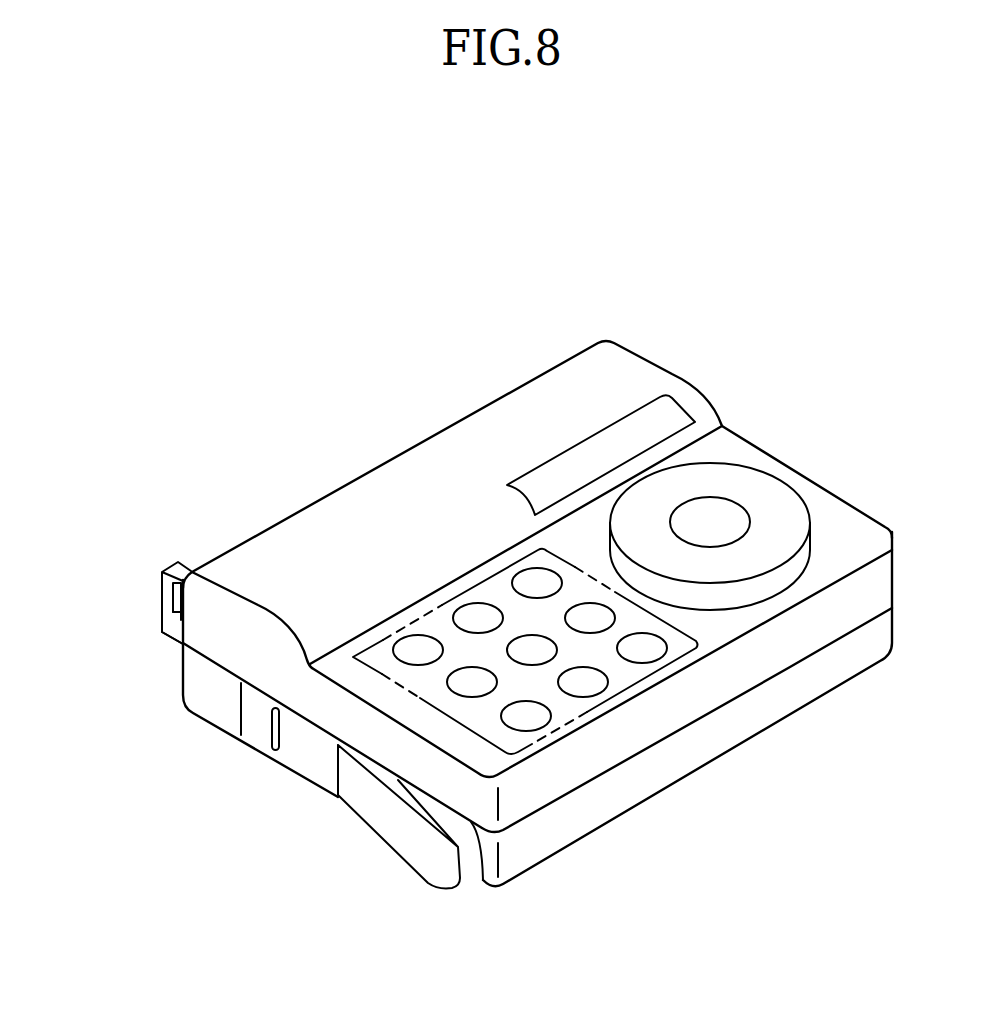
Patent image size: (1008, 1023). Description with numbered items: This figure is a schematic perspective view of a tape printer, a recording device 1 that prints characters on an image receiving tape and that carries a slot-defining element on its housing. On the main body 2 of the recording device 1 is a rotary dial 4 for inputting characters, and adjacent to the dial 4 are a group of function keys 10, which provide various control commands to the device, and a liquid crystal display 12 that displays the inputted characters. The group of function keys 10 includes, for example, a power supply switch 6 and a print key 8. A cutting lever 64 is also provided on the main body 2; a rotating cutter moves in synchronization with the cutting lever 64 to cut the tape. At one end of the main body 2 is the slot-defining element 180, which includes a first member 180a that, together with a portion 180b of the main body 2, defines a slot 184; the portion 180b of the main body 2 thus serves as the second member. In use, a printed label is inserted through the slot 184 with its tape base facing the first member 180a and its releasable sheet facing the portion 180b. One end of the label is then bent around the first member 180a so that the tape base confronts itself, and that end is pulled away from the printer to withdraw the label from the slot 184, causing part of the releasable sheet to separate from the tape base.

The recording device 1 is at (280, 500).
The main body 2 is at (460, 457).
The rotary dial 4 is at (781, 501).
The power supply switch 6 is at (526, 722).
The print key 8 is at (407, 653).
The group of function keys 10 is at (647, 677).
The liquid crystal display 12 is at (642, 423).
The cutting lever 64 is at (427, 863).
The slot-defining element 180 is at (161, 594).
The first member 180a is at (162, 598).
The portion of main body 180b is at (270, 638).
The slot 184 is at (182, 606).